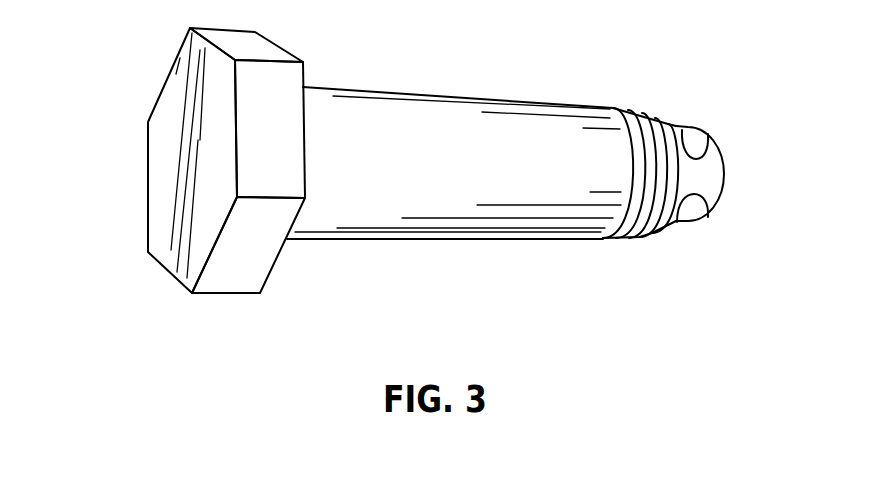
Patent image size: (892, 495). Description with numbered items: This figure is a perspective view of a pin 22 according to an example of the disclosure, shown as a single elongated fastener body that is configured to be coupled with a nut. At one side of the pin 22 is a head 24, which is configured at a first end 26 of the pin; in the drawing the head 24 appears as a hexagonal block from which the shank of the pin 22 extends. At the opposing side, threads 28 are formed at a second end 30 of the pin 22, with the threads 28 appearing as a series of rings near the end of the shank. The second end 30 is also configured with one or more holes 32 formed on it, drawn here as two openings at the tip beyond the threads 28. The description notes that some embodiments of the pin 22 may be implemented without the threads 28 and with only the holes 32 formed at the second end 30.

The pin 22 is at (398, 117).
The head 24 is at (260, 255).
The first end 26 is at (167, 110).
The threads 28 is at (642, 238).
The second end 30 is at (723, 170).
The holes 32 is at (693, 143).